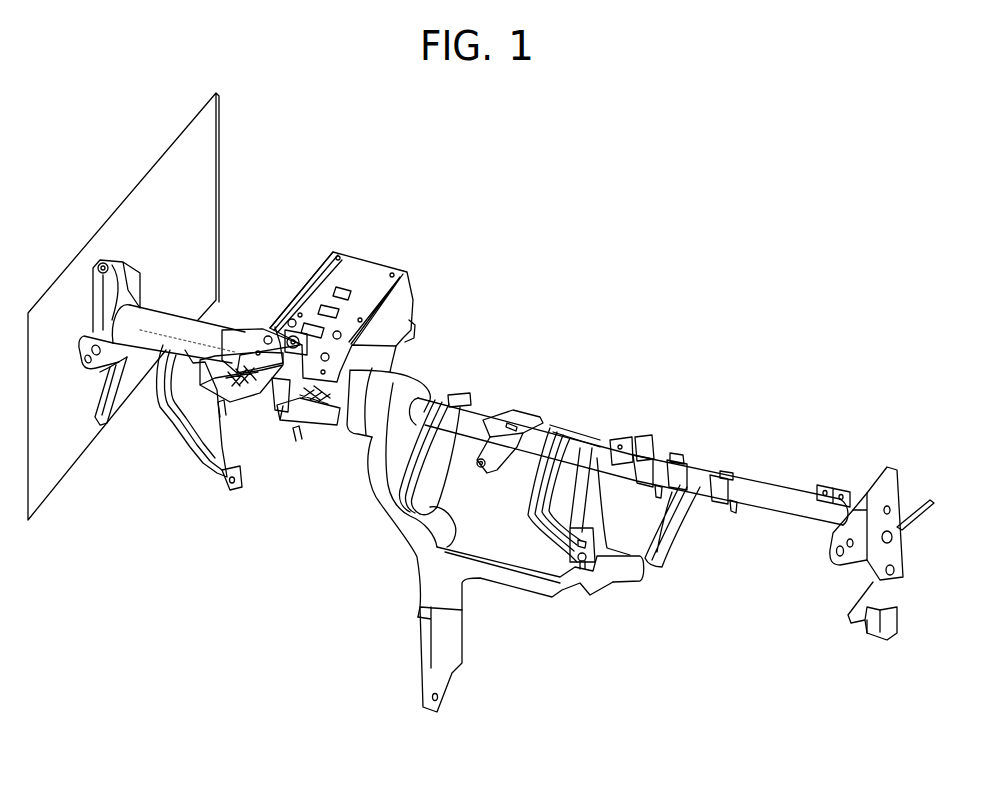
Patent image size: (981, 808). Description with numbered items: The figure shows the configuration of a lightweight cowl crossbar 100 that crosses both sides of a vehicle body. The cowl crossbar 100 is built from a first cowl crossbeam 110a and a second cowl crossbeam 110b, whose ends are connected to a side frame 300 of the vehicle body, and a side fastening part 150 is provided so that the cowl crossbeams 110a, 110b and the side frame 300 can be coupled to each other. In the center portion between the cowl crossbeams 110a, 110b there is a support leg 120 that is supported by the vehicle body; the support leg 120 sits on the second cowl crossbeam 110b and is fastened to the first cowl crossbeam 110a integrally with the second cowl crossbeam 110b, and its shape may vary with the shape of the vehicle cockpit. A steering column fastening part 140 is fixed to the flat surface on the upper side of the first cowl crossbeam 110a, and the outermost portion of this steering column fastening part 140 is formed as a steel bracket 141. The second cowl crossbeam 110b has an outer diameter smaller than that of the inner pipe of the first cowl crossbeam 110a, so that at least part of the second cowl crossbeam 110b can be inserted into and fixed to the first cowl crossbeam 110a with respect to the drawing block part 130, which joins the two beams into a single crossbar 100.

The cowl crossbar 100 is at (466, 184).
The first cowl crossbeam 110a is at (140, 345).
The second cowl crossbeam 110b is at (787, 498).
The support leg 120 is at (413, 533).
The drawing block part 130 is at (385, 375).
The steering column fastening part 140 is at (360, 317).
The steel bracket 141 is at (342, 267).
The side fastening part 150 is at (100, 268).
The side frame 300 is at (157, 190).